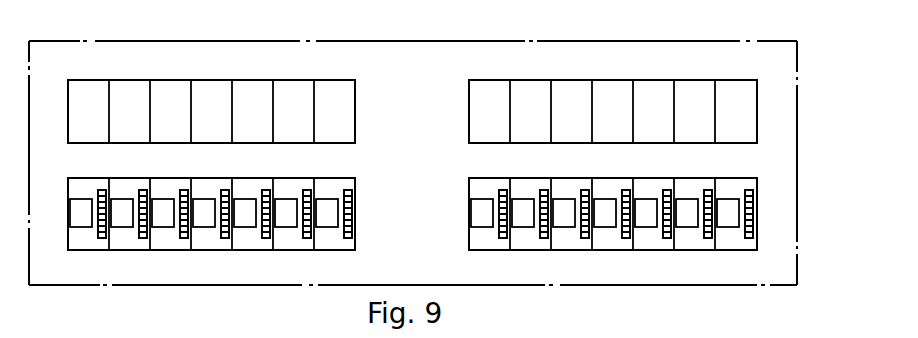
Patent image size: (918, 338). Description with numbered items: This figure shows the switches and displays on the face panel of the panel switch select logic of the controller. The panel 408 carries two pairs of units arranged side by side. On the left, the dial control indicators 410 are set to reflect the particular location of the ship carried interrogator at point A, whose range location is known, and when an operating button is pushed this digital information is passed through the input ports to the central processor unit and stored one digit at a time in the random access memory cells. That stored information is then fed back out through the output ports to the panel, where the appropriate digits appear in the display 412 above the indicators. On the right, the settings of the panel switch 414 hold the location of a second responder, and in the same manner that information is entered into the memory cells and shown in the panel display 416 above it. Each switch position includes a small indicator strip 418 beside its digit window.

The display panel 408 is at (176, 42).
The dial control indicators 410 is at (280, 251).
The display 412 is at (328, 146).
The panel switch 414 is at (573, 252).
The panel display 416 is at (496, 147).
The indicator strip 418 is at (352, 202).